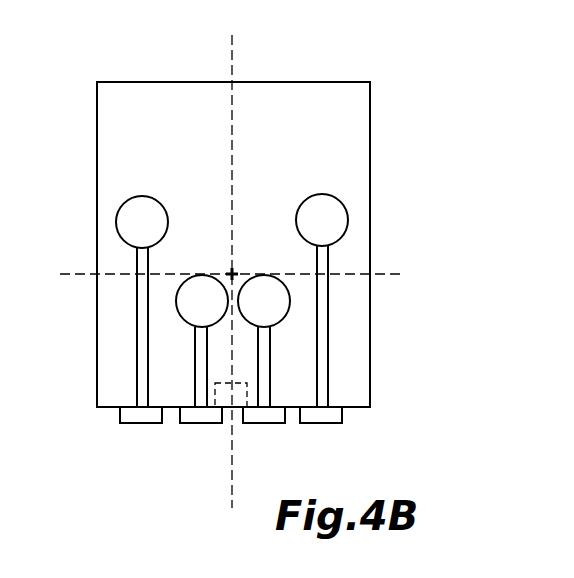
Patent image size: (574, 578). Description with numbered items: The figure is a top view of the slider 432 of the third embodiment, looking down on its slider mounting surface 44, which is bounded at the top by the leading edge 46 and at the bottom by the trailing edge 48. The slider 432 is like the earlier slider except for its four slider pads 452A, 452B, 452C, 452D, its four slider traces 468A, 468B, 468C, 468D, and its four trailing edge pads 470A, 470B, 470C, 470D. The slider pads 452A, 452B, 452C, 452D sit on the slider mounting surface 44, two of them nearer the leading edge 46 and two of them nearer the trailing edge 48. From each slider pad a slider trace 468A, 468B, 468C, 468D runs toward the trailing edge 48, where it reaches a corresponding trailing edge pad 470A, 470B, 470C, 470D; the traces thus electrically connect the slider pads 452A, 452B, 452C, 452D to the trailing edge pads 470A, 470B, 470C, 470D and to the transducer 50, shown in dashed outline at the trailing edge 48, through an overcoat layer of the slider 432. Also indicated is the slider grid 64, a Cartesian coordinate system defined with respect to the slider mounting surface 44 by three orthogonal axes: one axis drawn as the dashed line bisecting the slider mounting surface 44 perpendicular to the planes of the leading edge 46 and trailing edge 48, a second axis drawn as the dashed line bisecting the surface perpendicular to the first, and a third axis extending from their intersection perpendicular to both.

The slider 432 is at (322, 76).
The slider mounting surface 44 is at (300, 153).
The leading edge 46 is at (207, 81).
The trailing edge 48 is at (108, 409).
The transducer 50 is at (226, 417).
The slider grid 64 is at (234, 47).
The slider pad 452A is at (340, 236).
The slider pad 452B is at (275, 316).
The slider pad 452C is at (178, 306).
The slider pad 452D is at (131, 217).
The slider trace 468A is at (326, 312).
The slider trace 468B is at (265, 377).
The slider trace 468C is at (198, 338).
The slider trace 468D is at (138, 258).
The trailing edge pad 470A is at (303, 415).
The trailing edge pad 470B is at (262, 423).
The trailing edge pad 470C is at (193, 415).
The trailing edge pad 470D is at (128, 415).